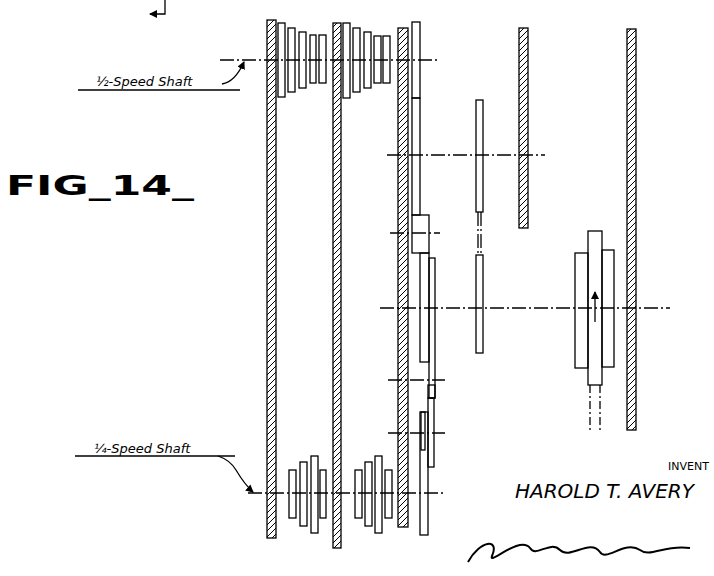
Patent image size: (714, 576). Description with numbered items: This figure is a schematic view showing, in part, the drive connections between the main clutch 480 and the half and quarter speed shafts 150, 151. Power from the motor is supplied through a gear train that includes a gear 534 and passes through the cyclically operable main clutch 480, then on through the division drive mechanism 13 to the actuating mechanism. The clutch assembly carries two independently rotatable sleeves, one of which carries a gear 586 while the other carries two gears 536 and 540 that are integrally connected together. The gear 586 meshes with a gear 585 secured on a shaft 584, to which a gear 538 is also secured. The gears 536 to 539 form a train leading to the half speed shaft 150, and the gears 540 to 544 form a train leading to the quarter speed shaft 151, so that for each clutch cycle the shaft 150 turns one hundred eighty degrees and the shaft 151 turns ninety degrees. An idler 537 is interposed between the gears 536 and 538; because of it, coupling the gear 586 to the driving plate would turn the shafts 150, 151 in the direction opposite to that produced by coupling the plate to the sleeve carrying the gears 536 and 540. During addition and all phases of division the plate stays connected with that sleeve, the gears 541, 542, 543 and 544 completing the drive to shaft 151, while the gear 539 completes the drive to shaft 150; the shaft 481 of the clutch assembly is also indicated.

The division drive mechanism 13 is at (146, 21).
The half speed shaft 150 is at (428, 60).
The quarter speed shaft 151 is at (268, 495).
The main clutch 480 is at (565, 332).
The shaft 481 is at (653, 308).
The gear 534 is at (590, 400).
The gear 536 is at (422, 270).
The idler 537 is at (429, 221).
The gear 538 is at (420, 125).
The gear 539 is at (421, 76).
The gear 540 is at (435, 333).
The gear 541 is at (434, 392).
The gear 542 is at (434, 412).
The gear 543 is at (425, 445).
The gear 544 is at (428, 478).
The shaft 584 is at (528, 155).
The gear 585 is at (483, 123).
The gear 586 is at (483, 275).